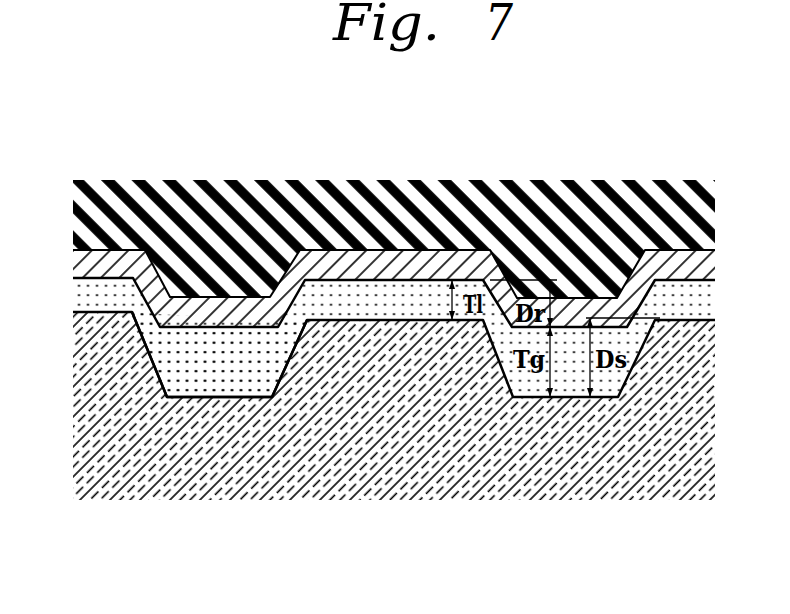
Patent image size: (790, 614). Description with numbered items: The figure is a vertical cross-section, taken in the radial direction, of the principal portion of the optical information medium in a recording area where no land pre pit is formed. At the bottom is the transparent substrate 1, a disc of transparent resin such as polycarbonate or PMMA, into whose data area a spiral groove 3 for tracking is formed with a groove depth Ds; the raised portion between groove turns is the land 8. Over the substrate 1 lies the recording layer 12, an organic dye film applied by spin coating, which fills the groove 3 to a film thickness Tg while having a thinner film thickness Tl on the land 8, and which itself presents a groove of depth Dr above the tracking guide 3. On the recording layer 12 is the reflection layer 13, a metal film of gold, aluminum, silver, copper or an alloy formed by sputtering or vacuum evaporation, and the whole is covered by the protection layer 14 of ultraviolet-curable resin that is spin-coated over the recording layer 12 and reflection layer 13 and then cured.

The transparent substrate 1 is at (612, 462).
The groove for tracking 3 is at (247, 396).
The land 8 is at (392, 320).
The recording layer 12 is at (203, 367).
The reflection layer 13 is at (674, 267).
The protection layer 14 is at (142, 232).